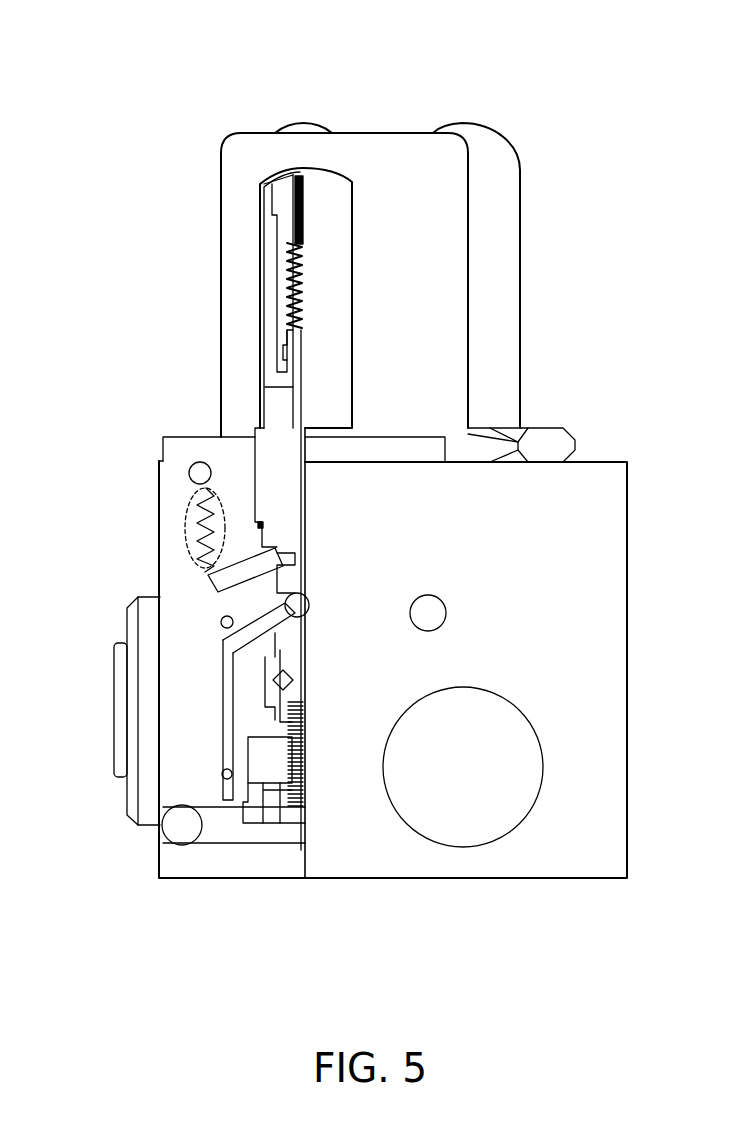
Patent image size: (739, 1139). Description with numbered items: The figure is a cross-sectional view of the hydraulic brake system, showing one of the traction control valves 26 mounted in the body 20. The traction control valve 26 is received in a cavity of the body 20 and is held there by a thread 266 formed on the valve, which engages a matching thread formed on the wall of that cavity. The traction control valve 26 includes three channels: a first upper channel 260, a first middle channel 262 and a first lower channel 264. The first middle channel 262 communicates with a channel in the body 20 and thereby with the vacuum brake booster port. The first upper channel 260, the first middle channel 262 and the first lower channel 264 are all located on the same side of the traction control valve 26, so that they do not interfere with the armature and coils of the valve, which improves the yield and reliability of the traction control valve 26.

The traction control valve 26 is at (311, 93).
The body 20 is at (610, 470).
The thread 266 is at (190, 510).
The first upper channel 260 is at (220, 590).
The first middle channel 262 is at (232, 637).
The first lower channel 264 is at (252, 838).